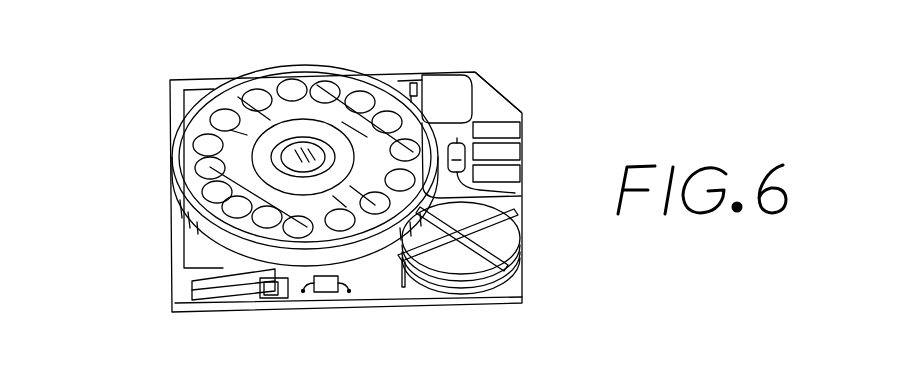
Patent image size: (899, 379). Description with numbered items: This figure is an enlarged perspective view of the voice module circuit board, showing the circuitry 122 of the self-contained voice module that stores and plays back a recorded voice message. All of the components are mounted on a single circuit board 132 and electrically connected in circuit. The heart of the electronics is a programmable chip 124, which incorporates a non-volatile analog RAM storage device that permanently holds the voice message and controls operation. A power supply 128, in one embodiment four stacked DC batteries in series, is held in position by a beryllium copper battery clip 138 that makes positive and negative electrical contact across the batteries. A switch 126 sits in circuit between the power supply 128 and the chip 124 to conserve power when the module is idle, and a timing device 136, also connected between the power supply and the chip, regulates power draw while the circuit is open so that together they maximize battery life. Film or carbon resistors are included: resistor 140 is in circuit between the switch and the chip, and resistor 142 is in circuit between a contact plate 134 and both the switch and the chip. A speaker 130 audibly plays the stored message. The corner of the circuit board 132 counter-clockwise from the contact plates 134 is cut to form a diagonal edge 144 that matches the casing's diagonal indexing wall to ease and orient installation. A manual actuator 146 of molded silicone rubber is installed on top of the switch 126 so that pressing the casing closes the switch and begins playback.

The circuitry 122 is at (128, 77).
The programmable chip 124 is at (447, 82).
The switch 126 is at (280, 298).
The power supply 128 is at (460, 273).
The speaker 130 is at (227, 162).
The circuit board 132 is at (172, 277).
The contact plate 134 is at (518, 173).
The timing device 136 is at (412, 84).
The battery clip 138 is at (500, 257).
The resistor 140 is at (332, 294).
The resistor 142 is at (512, 197).
The diagonal edge 144 is at (500, 91).
The manual actuator 146 is at (250, 281).